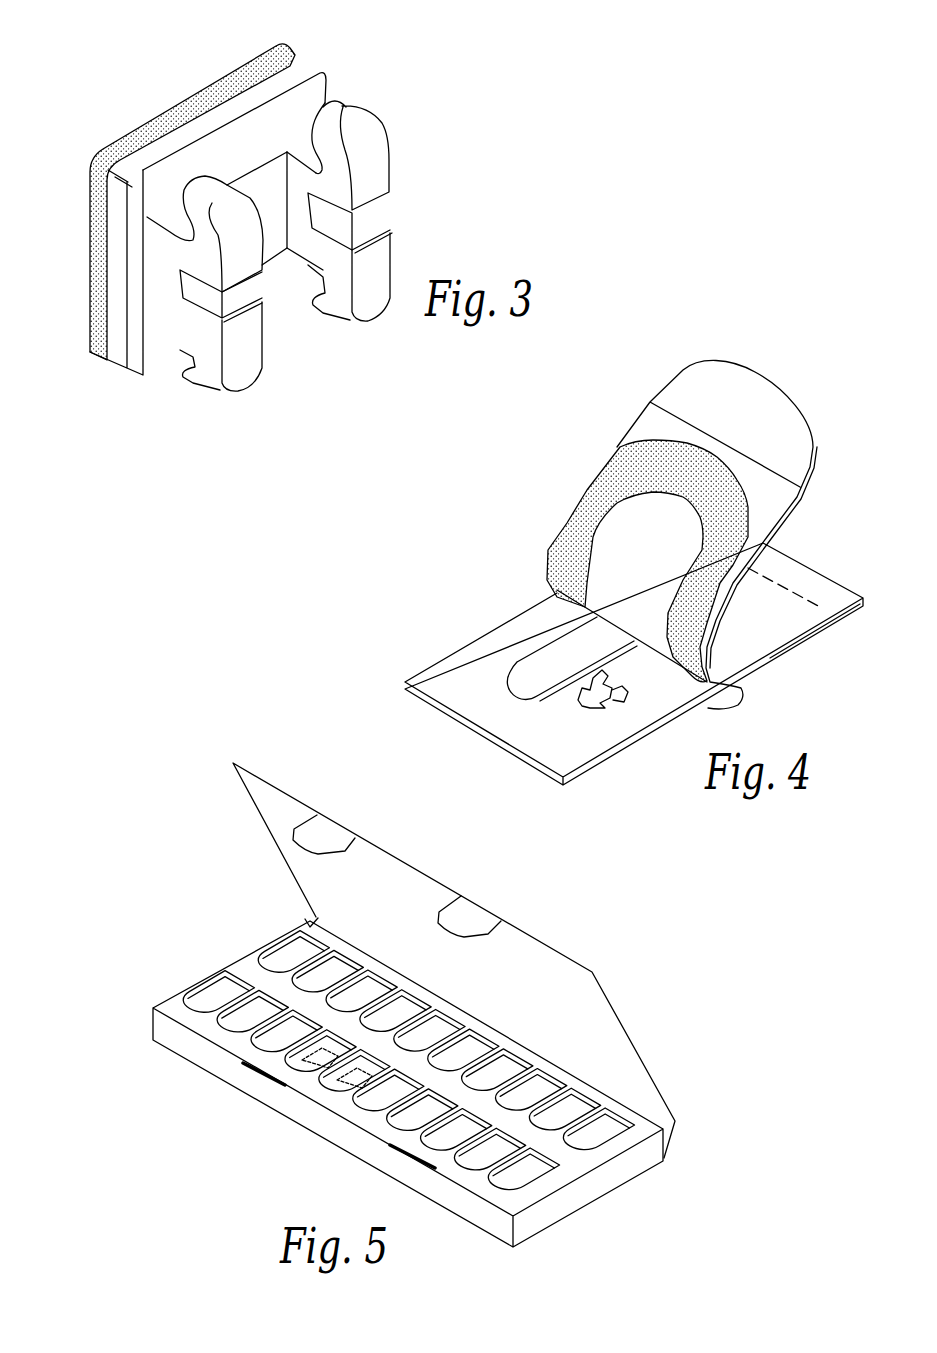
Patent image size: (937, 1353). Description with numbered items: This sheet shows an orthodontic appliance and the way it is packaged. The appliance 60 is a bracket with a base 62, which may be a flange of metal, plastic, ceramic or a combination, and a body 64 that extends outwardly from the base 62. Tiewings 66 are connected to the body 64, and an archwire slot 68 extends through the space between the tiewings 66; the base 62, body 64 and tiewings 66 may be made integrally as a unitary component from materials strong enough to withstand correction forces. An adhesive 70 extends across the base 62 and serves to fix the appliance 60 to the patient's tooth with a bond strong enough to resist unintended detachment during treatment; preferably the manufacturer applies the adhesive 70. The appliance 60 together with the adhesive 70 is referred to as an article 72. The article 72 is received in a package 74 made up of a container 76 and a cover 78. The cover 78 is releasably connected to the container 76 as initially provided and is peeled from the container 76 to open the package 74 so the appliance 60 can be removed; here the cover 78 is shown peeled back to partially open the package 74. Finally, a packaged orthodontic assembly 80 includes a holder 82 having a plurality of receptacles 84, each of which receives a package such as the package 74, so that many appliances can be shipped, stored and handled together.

In FIG. 3, the appliance 60 is at (400, 158).
In FIG. 4, the appliance 60 is at (590, 662).
In FIG. 3, the base 62 is at (294, 64).
In FIG. 3, the body 64 is at (163, 293).
In FIG. 3, the tiewings 66 is at (340, 113).
In FIG. 3, the archwire slot 68 is at (367, 213).
In FIG. 3, the adhesive 70 is at (227, 77).
In FIG. 3, the article 72 is at (100, 78).
In FIG. 4, the article 72 is at (566, 448).
In FIG. 4, the package 74 is at (798, 642).
In FIG. 5, the package 74 is at (500, 1153).
In FIG. 4, the container 76 is at (605, 753).
In FIG. 4, the cover 78 is at (795, 455).
In FIG. 5, the packaged orthodontic assembly 80 is at (387, 1009).
In FIG. 5, the holder 82 is at (203, 1077).
In FIG. 5, the receptacles 84 is at (347, 1082).